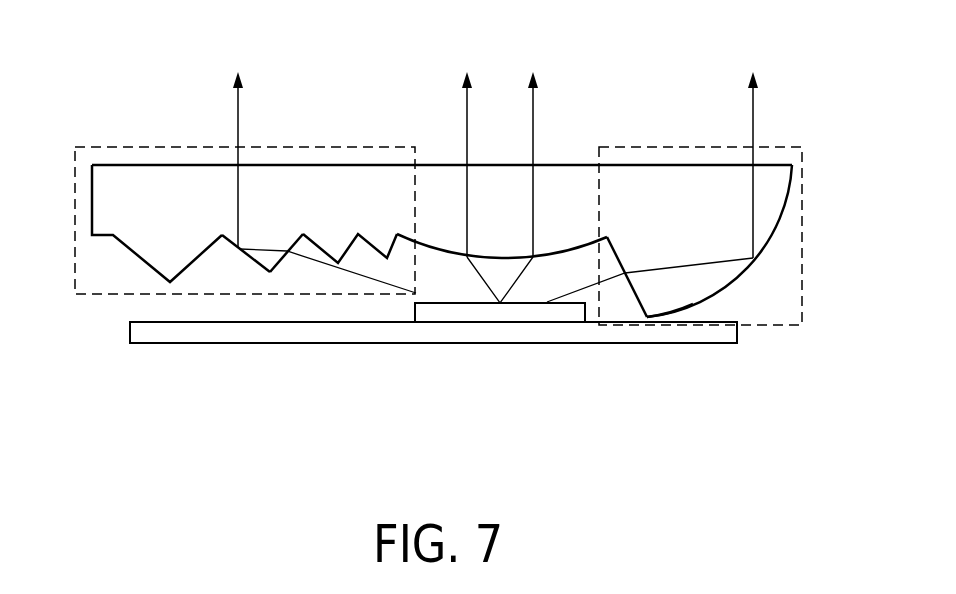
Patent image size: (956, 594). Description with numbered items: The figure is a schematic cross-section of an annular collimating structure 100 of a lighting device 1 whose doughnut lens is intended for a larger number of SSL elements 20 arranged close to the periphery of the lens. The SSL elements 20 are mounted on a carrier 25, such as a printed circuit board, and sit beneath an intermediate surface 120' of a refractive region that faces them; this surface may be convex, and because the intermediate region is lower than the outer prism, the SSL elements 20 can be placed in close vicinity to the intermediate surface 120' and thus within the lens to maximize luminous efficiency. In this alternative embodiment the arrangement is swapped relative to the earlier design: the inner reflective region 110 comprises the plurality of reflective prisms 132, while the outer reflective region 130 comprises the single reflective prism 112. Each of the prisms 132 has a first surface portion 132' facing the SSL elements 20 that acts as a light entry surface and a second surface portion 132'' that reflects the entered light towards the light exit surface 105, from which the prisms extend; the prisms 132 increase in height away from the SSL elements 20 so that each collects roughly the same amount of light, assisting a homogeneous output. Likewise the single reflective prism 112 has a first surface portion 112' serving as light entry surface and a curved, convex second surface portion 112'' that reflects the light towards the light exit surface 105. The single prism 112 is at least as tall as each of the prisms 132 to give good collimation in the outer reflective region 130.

The lighting device 1 is at (104, 86).
The SSL elements 20 is at (538, 313).
The carrier 25 is at (475, 332).
The annular collimating structure 100 is at (442, 247).
The light exit surface 105 is at (577, 165).
The inner reflective region 110 is at (192, 147).
The outer reflective region 130 is at (675, 147).
The intermediate surface 120' is at (502, 312).
The single reflective prism 112 is at (672, 343).
The first surface portion 112' is at (623, 317).
The second surface portion 112'' is at (719, 281).
The reflective prisms 132 is at (327, 312).
The first surface portion 132' is at (316, 312).
The second surface portion 132'' is at (226, 312).